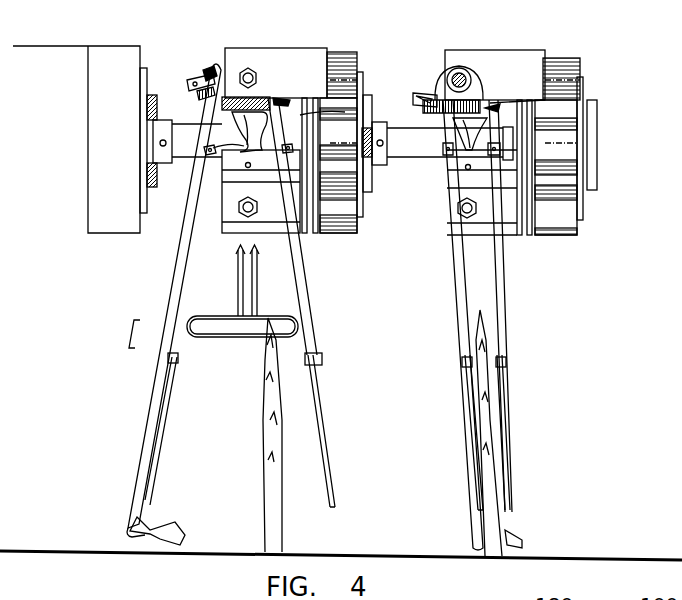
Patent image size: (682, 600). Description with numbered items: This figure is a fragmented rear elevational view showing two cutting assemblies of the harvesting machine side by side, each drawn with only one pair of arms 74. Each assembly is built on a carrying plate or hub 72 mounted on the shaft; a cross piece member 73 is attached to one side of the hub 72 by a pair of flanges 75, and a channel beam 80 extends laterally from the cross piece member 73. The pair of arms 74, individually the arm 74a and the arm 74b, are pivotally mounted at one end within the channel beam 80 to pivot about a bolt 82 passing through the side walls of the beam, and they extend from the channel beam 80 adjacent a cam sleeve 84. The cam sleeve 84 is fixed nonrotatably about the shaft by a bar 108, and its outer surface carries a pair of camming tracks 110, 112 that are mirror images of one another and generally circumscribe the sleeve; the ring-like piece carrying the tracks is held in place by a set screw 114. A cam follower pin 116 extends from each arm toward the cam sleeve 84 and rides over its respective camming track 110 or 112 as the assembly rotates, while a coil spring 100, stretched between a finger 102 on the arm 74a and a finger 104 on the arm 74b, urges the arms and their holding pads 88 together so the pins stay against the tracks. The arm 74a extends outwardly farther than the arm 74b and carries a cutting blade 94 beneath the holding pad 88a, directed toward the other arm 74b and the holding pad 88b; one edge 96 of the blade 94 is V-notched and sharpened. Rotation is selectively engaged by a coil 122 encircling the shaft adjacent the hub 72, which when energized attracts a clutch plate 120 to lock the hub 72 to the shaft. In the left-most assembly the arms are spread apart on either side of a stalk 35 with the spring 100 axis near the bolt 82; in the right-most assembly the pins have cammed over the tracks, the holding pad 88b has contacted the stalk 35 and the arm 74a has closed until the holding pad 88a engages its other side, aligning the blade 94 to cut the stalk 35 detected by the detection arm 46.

The bar 108 is at (150, 95).
The spring 100 is at (207, 66).
The finger 102 is at (190, 80).
The bolt 82 is at (248, 68).
The channel beam 80 is at (298, 48).
The flange 75 is at (327, 55).
The camming track 112 is at (270, 127).
The cross piece member 73 is at (305, 115).
The cam sleeve 84 is at (222, 135).
The camming track 110 is at (224, 158).
The set screw 114 is at (245, 172).
The clutch plate 120 is at (311, 233).
The hub 72 is at (352, 233).
The coil 122 is at (364, 205).
The cam follower pin 116 is at (345, 226).
The finger 104 is at (545, 100).
The arm 74a is at (178, 288).
The arm 74b is at (305, 290).
The pair of arms 74 is at (455, 298).
The detection arm 46 is at (237, 282).
The holding pad 88a is at (165, 425).
The holding pad 88b is at (322, 430).
The holding pads 88 is at (475, 438).
The cutting blade 94 is at (158, 516).
The edge 96 is at (130, 535).
The stalk 35 is at (283, 535).